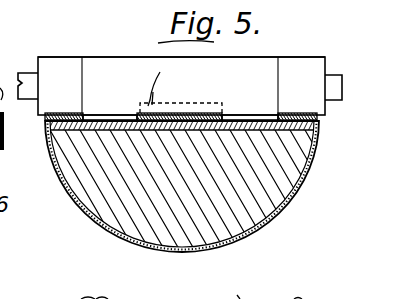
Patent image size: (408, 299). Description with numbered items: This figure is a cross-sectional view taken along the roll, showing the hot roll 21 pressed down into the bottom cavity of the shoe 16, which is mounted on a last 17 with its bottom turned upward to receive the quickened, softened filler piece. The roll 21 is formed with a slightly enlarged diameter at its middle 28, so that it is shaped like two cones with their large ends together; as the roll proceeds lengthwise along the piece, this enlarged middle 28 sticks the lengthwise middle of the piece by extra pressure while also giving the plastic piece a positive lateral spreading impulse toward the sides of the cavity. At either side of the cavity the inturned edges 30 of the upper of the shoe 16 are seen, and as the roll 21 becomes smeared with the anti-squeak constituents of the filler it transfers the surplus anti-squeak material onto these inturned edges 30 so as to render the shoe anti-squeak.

The shoe 16 is at (289, 204).
The last 17 is at (251, 217).
The hot roll 21 is at (180, 86).
The enlarged middle of the roll 28 is at (180, 55).
The inturned edges of the upper 30 is at (98, 103).